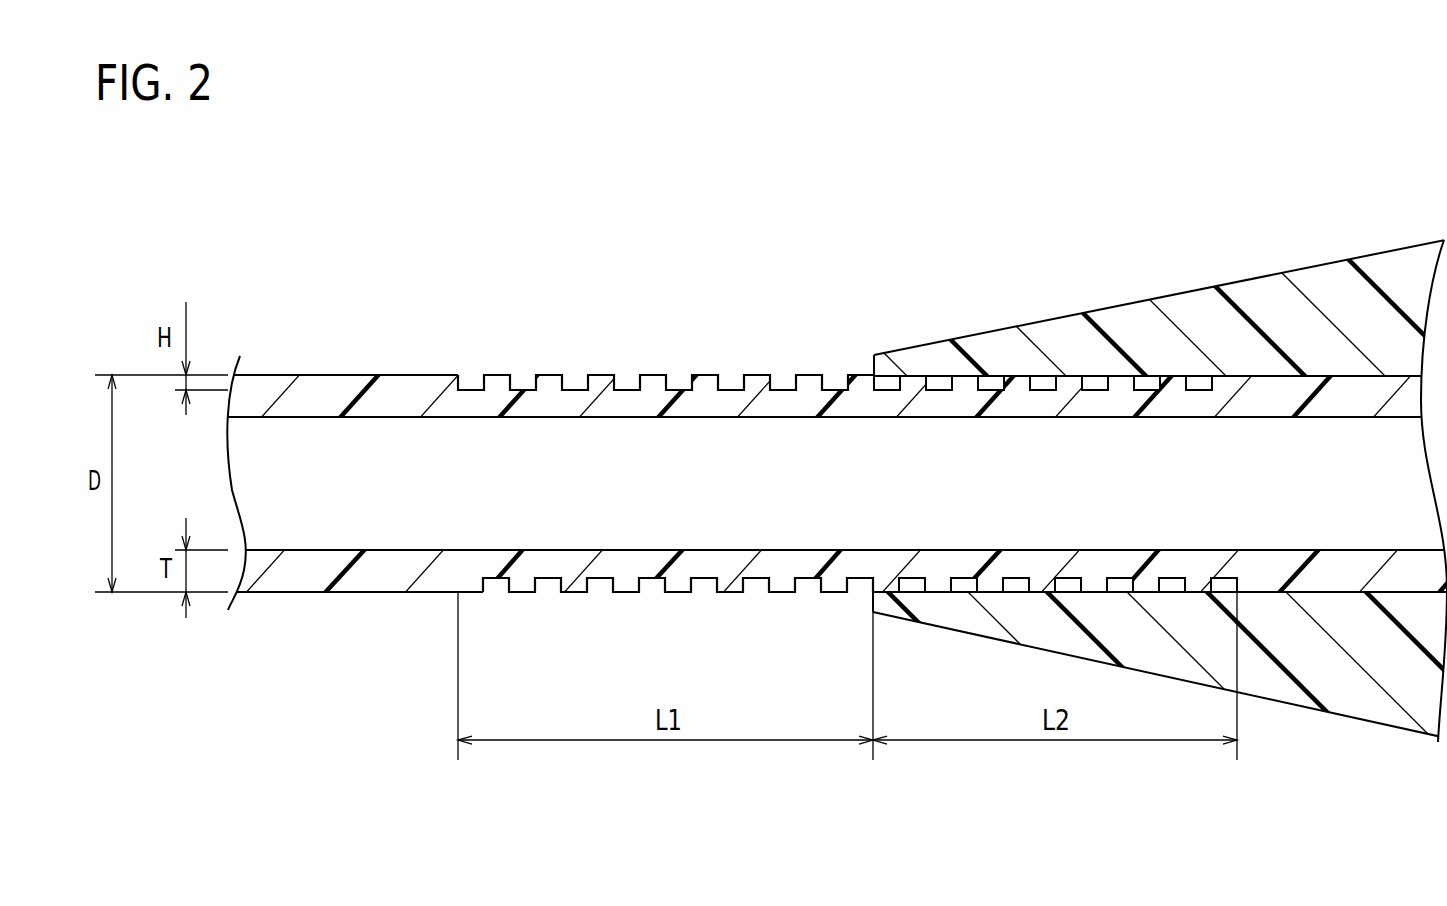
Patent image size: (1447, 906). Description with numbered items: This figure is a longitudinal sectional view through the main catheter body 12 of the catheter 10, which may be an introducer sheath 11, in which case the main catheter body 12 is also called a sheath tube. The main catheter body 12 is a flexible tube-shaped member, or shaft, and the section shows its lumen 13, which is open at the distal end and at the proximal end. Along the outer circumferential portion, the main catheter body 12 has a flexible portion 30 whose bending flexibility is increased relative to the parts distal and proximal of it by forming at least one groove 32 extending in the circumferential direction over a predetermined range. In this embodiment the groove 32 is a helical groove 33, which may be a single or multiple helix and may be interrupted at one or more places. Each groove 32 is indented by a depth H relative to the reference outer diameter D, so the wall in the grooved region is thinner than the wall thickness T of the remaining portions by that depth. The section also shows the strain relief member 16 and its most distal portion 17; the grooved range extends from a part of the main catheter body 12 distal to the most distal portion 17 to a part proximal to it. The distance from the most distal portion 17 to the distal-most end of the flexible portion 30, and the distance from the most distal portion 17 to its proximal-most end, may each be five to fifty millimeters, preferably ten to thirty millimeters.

The catheter 10 is at (662, 204).
The introducer sheath 11 is at (823, 460).
The main catheter body 12 is at (345, 370).
The lumen 13 is at (378, 512).
The strain relief member 16 is at (1125, 318).
The most distal portion 17 is at (873, 355).
The flexible portion 30 is at (541, 369).
The groove 32 is at (600, 580).
The helical groove 33 is at (860, 614).